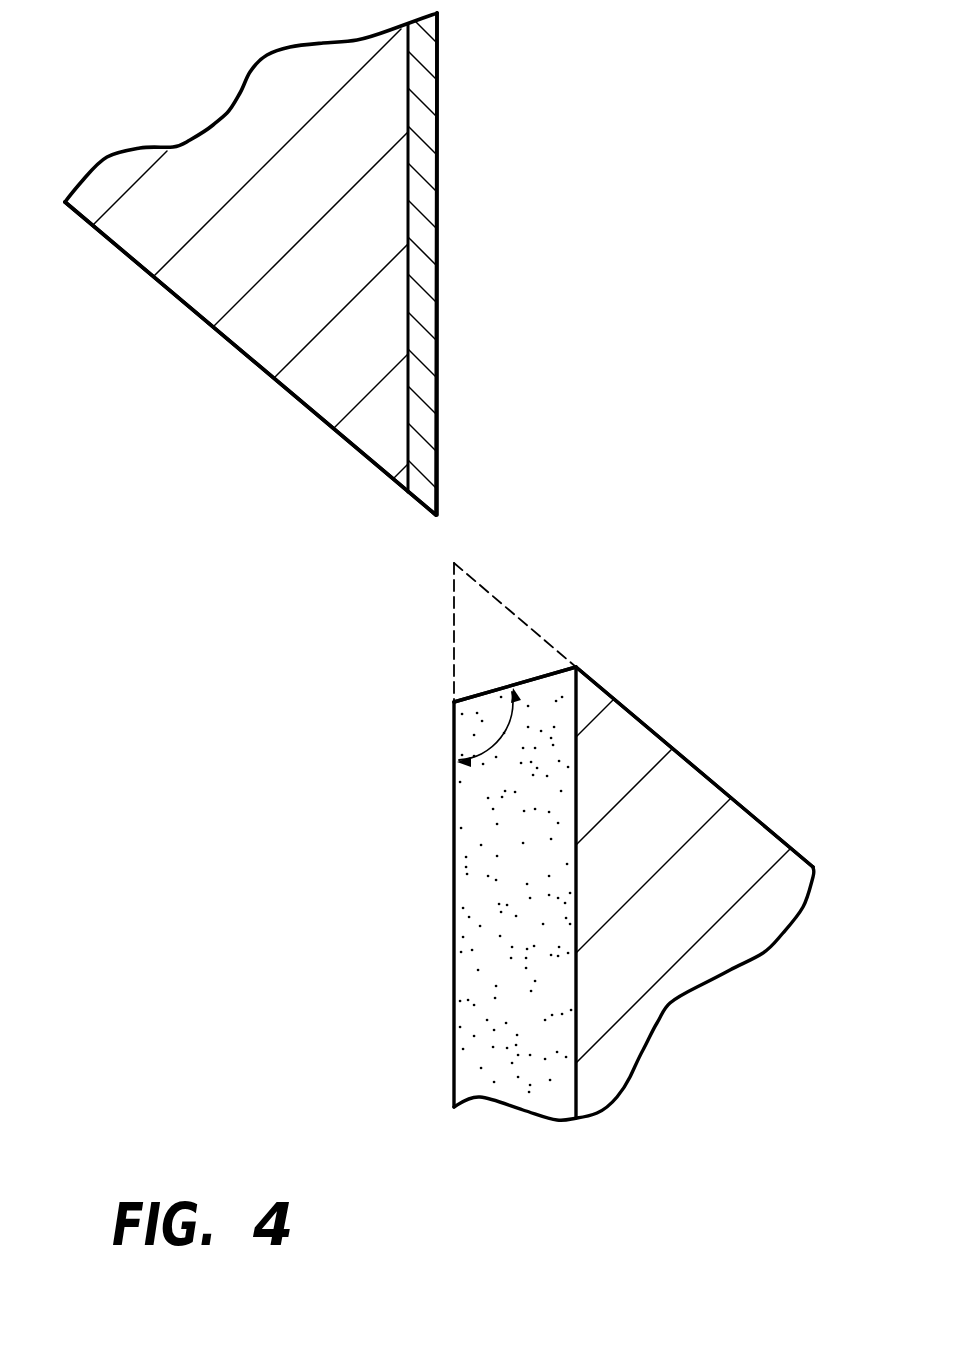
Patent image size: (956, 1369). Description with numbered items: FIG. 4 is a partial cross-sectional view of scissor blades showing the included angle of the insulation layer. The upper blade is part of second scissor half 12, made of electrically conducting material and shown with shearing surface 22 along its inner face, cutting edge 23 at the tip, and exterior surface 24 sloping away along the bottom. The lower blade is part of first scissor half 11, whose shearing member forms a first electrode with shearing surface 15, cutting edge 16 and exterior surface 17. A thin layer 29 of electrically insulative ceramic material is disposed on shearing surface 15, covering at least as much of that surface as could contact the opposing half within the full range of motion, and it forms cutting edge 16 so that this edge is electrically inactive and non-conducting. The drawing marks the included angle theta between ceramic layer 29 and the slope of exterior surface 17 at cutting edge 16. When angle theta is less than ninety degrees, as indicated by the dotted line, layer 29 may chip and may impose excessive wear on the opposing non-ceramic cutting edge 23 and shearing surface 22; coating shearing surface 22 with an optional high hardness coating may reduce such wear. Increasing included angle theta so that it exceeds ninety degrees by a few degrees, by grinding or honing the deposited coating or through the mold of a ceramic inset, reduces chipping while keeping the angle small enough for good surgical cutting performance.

The first scissor half 11 is at (763, 609).
The second scissor half 12 is at (212, 430).
The shearing surface 15 is at (577, 995).
The cutting edge 16 is at (453, 702).
The exterior surface 17 is at (712, 782).
The shearing surface 22 is at (438, 217).
The cutting edge 23 is at (436, 513).
The exterior surface 24 is at (168, 291).
The insulative layer 29 is at (452, 990).
The included angle theta is at (495, 740).